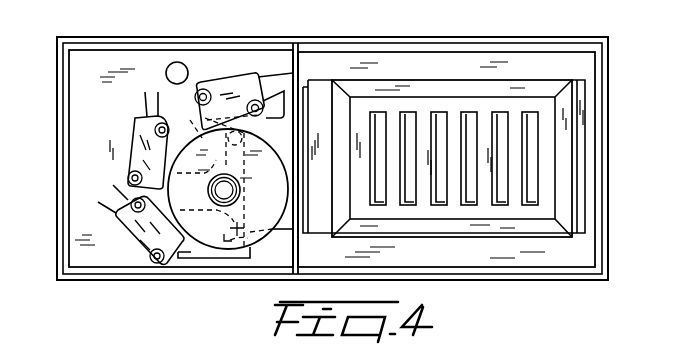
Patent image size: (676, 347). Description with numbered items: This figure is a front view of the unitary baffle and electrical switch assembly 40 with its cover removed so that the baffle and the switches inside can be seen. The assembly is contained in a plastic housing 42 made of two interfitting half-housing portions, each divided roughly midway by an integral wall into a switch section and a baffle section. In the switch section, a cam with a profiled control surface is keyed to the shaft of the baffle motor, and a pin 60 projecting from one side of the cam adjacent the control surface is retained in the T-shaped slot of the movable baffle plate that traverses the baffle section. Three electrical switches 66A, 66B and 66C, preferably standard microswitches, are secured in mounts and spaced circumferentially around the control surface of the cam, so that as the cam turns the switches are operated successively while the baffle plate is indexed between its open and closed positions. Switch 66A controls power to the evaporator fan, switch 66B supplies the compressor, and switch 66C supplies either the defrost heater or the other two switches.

The unitary baffle and electrical switch assembly 40 is at (332, 175).
The plastic housing 42 is at (566, 38).
The pin 60 is at (188, 108).
The electrical switch 66A is at (147, 250).
The electrical switch 66B is at (133, 131).
The electrical switch 66C is at (235, 80).